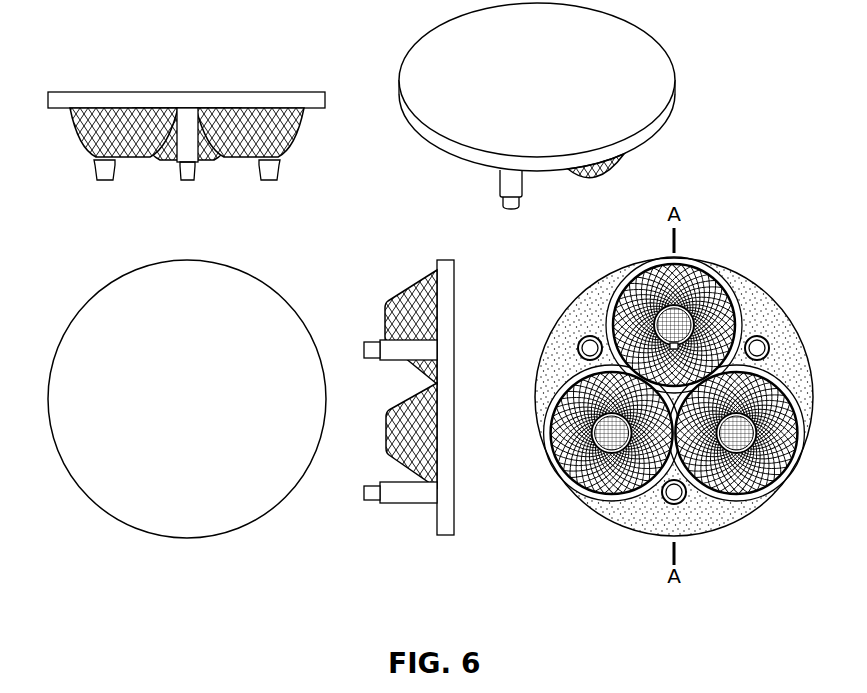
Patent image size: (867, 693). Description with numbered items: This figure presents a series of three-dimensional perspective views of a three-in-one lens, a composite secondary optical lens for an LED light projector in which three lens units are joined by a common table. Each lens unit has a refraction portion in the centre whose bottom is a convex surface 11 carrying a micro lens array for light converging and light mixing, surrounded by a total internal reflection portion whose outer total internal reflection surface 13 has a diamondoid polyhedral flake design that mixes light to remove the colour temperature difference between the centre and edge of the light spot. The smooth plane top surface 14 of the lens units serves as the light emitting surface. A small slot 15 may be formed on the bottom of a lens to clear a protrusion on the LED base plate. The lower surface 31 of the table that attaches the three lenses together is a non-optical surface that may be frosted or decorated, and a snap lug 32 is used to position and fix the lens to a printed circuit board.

The convex surface 11 is at (656, 285).
The total internal reflection surface 13 is at (273, 123).
The top surface 14 is at (455, 420).
The slot 15 is at (608, 369).
The lower surface of table 31 is at (587, 313).
The snap lug 32 is at (397, 347).